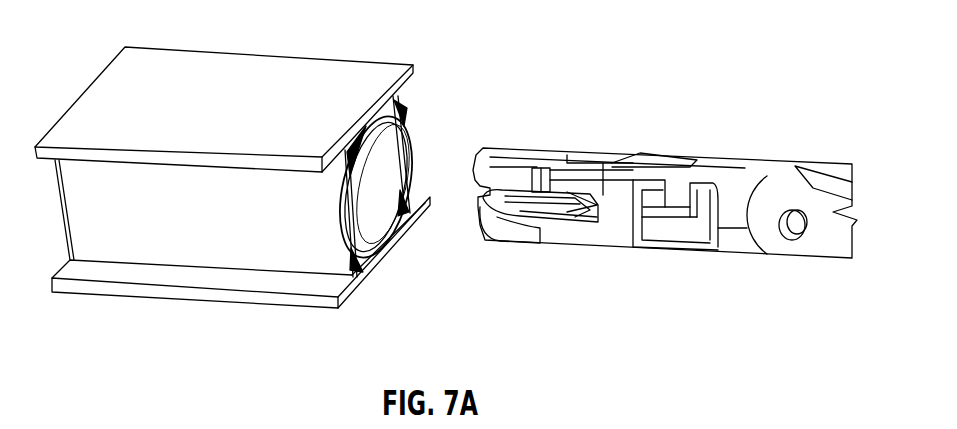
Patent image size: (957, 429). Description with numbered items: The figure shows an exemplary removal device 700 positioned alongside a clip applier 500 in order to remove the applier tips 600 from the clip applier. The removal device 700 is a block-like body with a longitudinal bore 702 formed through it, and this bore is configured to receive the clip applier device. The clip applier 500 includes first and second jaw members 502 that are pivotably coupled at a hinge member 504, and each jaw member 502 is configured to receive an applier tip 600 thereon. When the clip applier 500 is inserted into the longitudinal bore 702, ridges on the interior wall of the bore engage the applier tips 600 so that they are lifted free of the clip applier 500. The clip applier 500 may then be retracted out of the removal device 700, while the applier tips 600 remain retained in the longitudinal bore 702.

The removal device 700 is at (272, 75).
The longitudinal bore 702 is at (364, 177).
The clip applier 500 is at (812, 144).
The applier tip 600 is at (572, 157).
The jaw member 502 is at (725, 163).
The hinge member 504 is at (822, 243).